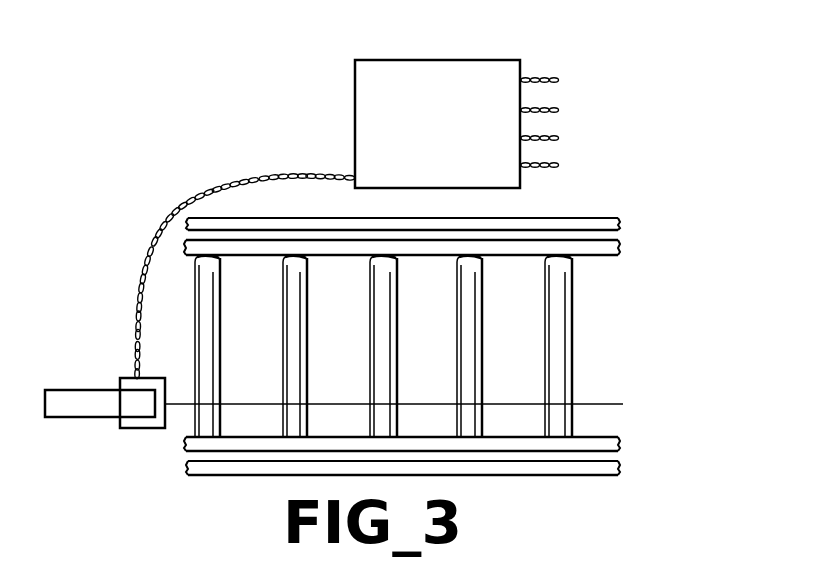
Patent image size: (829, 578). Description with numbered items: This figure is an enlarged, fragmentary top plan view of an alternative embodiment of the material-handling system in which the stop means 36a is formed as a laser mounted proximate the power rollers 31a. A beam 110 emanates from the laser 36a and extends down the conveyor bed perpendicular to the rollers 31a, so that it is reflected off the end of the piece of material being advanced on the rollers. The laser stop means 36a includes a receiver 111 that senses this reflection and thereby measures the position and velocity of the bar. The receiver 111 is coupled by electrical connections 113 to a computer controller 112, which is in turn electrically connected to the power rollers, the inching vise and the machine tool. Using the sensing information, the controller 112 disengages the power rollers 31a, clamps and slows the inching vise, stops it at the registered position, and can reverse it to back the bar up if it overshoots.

The computer controller 112 is at (440, 58).
The electrical connections 113 is at (261, 175).
The power rollers 31a is at (370, 355).
The stop means 36a is at (64, 389).
The receiver 111 is at (155, 430).
The beam 110 is at (608, 404).